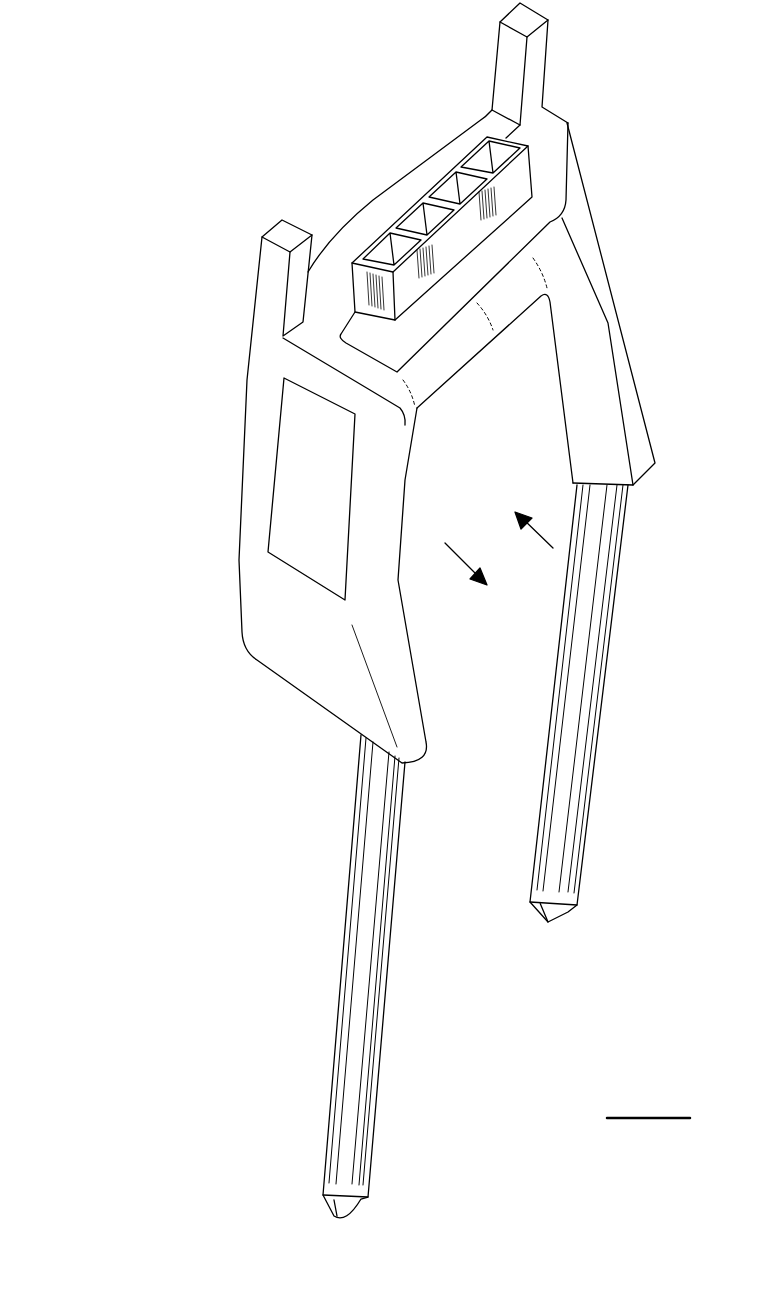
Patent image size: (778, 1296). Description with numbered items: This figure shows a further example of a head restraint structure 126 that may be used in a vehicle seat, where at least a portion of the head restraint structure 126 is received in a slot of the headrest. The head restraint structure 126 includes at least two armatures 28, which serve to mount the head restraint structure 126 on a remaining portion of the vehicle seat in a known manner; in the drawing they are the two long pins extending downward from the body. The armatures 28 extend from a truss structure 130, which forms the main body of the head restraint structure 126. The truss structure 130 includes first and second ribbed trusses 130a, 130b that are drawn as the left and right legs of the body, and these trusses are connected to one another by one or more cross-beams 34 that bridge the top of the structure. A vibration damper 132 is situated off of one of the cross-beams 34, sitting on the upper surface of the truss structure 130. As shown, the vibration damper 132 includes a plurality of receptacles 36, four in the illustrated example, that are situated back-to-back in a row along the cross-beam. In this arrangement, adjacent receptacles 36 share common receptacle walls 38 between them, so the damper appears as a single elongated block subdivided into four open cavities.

The armatures 28 is at (553, 765).
The cross-beams 34 is at (423, 175).
The receptacles 36 is at (387, 251).
The common receptacle walls 38 is at (508, 145).
The head restraint structure 126 is at (160, 120).
The truss structure 130 is at (680, 470).
The first ribbed truss 130a is at (247, 489).
The second ribbed truss 130b is at (610, 377).
The vibration damper 132 is at (513, 188).